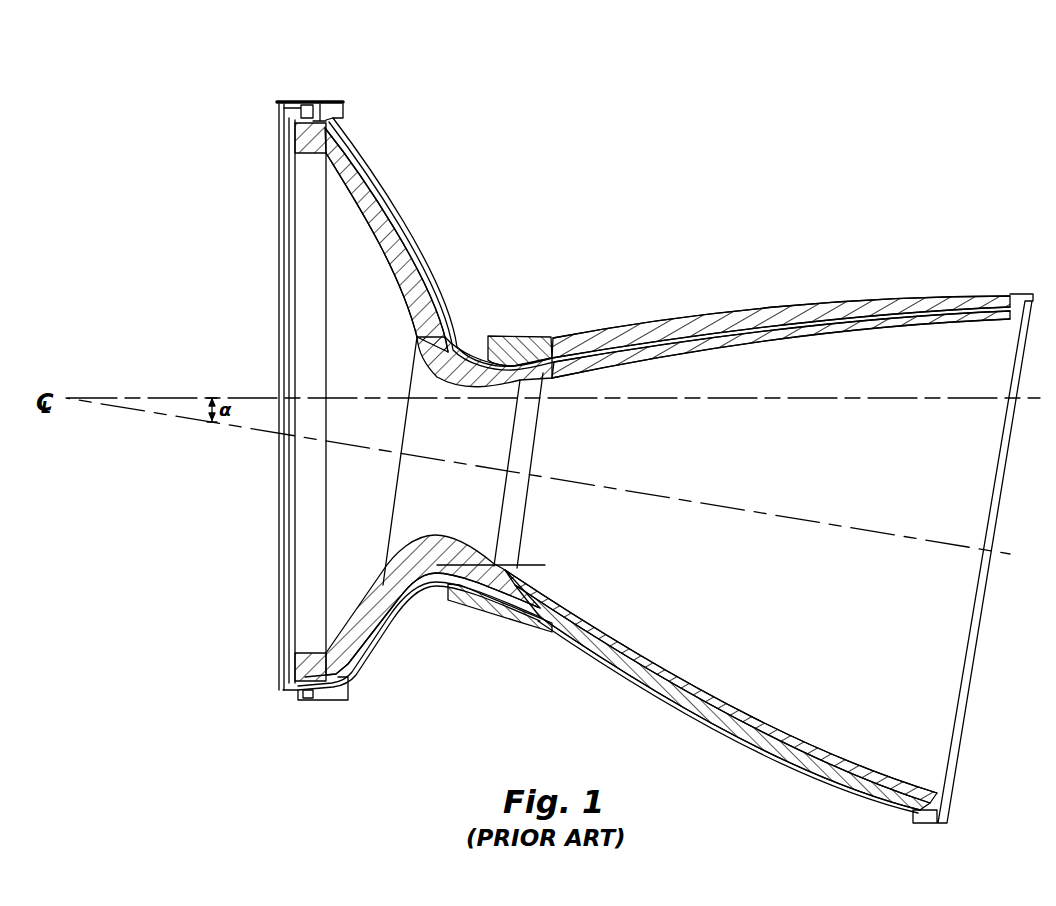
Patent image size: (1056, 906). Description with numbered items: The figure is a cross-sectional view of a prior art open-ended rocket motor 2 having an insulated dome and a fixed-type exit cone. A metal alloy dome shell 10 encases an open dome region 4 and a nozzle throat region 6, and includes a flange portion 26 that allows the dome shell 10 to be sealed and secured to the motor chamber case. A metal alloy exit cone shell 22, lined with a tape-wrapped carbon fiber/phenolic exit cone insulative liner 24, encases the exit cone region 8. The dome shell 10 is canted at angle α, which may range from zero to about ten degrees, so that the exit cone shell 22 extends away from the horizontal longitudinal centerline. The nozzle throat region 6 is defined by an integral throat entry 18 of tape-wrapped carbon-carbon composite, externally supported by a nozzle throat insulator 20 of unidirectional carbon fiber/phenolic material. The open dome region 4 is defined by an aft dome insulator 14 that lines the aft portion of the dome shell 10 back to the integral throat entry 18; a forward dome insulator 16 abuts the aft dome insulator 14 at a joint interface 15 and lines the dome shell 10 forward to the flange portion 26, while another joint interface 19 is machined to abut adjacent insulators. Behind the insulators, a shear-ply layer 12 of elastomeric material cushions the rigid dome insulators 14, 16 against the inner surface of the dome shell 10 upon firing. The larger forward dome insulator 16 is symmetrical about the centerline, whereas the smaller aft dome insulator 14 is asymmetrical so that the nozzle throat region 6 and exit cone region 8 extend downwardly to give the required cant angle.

The motor 2 is at (723, 243).
The open dome region 4 is at (344, 454).
The nozzle throat region 6 is at (470, 480).
The exit cone region 8 is at (729, 660).
The dome shell 10 is at (418, 228).
The shear-ply layer 12 is at (377, 168).
The aft dome insulator 14 is at (440, 292).
The joint interface 15 is at (326, 583).
The forward dome insulator 16 is at (310, 133).
The integral throat entry 18 is at (455, 345).
The joint interface 19 is at (389, 507).
The nozzle throat insulator 20 is at (523, 353).
The exit cone shell 22 is at (947, 297).
The exit cone insulative liner 24 is at (870, 317).
The flange portion 26 is at (290, 101).